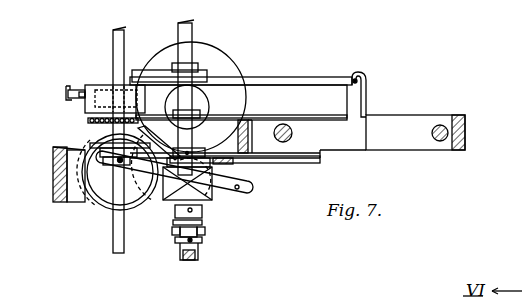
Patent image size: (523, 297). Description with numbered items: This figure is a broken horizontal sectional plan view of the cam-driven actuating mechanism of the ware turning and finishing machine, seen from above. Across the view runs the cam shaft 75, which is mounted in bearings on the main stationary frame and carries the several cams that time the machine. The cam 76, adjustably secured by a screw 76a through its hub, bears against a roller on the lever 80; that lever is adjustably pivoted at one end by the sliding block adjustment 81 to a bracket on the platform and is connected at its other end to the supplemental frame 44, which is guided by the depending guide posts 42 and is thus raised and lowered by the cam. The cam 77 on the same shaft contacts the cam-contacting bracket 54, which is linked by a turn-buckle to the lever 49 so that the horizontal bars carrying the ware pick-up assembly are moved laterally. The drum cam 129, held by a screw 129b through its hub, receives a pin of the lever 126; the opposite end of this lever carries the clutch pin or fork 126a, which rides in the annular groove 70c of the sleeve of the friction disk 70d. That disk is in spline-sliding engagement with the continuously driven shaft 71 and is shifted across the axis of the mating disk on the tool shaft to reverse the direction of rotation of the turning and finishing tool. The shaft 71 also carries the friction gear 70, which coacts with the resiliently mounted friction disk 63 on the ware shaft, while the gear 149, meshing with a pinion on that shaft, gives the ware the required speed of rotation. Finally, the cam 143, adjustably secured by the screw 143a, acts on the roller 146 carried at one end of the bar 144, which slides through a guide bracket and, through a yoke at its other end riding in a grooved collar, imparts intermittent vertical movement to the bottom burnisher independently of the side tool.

The shaft 71 is at (113, 46).
The cam shaft 75 is at (193, 36).
The cam 76 is at (157, 70).
The screw 76a is at (190, 66).
The gear 149 is at (240, 74).
The friction gear or disk 63 is at (208, 104).
The lever 80 is at (311, 77).
The friction gear or drive disk 70 is at (232, 120).
The guide posts 42 is at (290, 127).
The supplemental frame 44 is at (385, 150).
The sliding block adjustment pivot 81 is at (100, 84).
The clutch pin or fork 126a is at (103, 143).
The friction disk or gear 70d is at (100, 143).
The lever 126 is at (250, 190).
The cam 77 is at (173, 157).
The annular groove 70c is at (95, 201).
The cam-contacting member or bracket 54 is at (233, 161).
The lever 49 is at (280, 160).
The drum cam 129 is at (210, 200).
The screw 129b is at (203, 226).
The roller 146 is at (174, 228).
The bar 144 is at (204, 236).
The cam 143 is at (205, 247).
The screw 143a is at (180, 248).